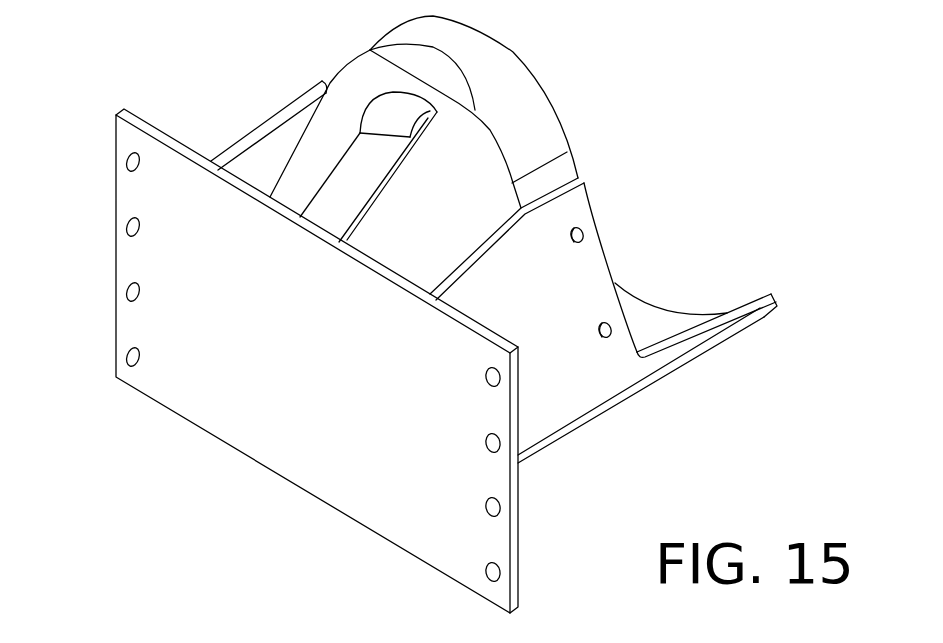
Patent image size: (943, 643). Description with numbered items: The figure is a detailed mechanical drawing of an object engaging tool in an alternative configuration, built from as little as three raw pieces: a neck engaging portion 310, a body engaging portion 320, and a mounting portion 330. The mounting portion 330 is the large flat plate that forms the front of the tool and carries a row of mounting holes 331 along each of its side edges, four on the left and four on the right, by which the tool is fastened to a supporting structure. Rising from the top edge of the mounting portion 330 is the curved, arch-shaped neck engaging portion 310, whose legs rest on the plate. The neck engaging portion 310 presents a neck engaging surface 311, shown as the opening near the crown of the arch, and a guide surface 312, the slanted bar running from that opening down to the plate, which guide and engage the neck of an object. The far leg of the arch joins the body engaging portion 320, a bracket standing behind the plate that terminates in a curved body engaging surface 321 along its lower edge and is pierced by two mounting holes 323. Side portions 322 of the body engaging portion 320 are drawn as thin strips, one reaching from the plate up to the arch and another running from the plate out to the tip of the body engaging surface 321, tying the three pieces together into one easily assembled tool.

The neck engaging portion 310 is at (532, 97).
The neck engaging surface 311 is at (446, 130).
The guide surface 312 is at (378, 204).
The body engaging portion 320 is at (673, 305).
The body engaging surface 321 is at (665, 330).
The side portions 322 is at (252, 128).
The mounting holes 323 is at (568, 237).
The mounting portion 330 is at (297, 465).
The mounting holes 331 is at (127, 167).